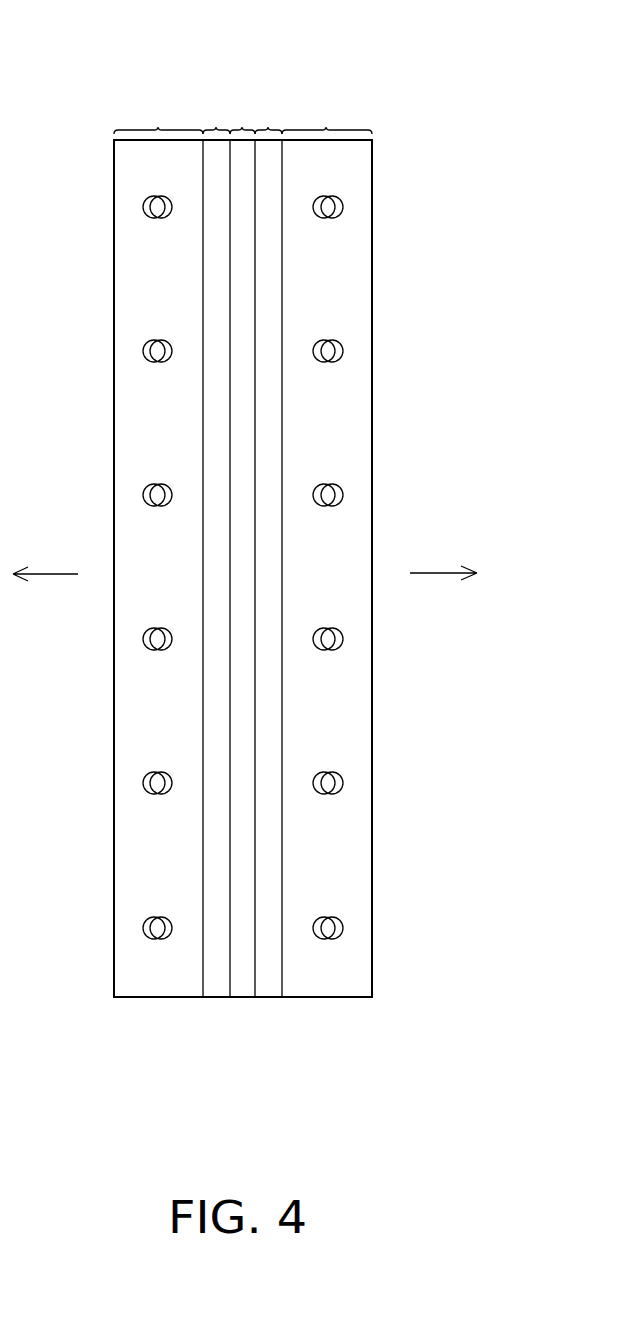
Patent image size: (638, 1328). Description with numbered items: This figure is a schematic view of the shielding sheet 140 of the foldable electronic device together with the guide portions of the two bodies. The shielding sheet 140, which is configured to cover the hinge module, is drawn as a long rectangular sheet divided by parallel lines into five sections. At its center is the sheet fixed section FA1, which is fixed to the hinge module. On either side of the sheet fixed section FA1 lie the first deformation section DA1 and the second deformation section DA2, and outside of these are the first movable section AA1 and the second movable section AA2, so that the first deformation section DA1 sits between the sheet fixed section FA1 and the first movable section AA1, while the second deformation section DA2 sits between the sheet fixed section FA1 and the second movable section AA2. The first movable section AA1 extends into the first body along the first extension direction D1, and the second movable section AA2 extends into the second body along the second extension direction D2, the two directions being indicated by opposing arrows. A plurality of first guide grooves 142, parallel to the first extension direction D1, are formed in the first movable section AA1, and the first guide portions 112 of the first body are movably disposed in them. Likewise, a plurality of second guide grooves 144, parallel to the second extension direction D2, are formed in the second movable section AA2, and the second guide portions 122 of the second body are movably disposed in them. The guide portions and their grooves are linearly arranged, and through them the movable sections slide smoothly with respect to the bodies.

The shielding sheet 140 is at (469, 74).
The first movable section AA1 is at (326, 127).
The second movable section AA2 is at (158, 127).
The first deformation section DA1 is at (268, 127).
The second deformation section DA2 is at (216, 127).
The sheet fixed section FA1 is at (242, 127).
The first guide portions 112 is at (336, 928).
The second guide portions 122 is at (152, 928).
The first guide grooves 142 is at (321, 931).
The second guide grooves 144 is at (166, 931).
The first extension direction D1 is at (443, 557).
The second extension direction D2 is at (45, 557).